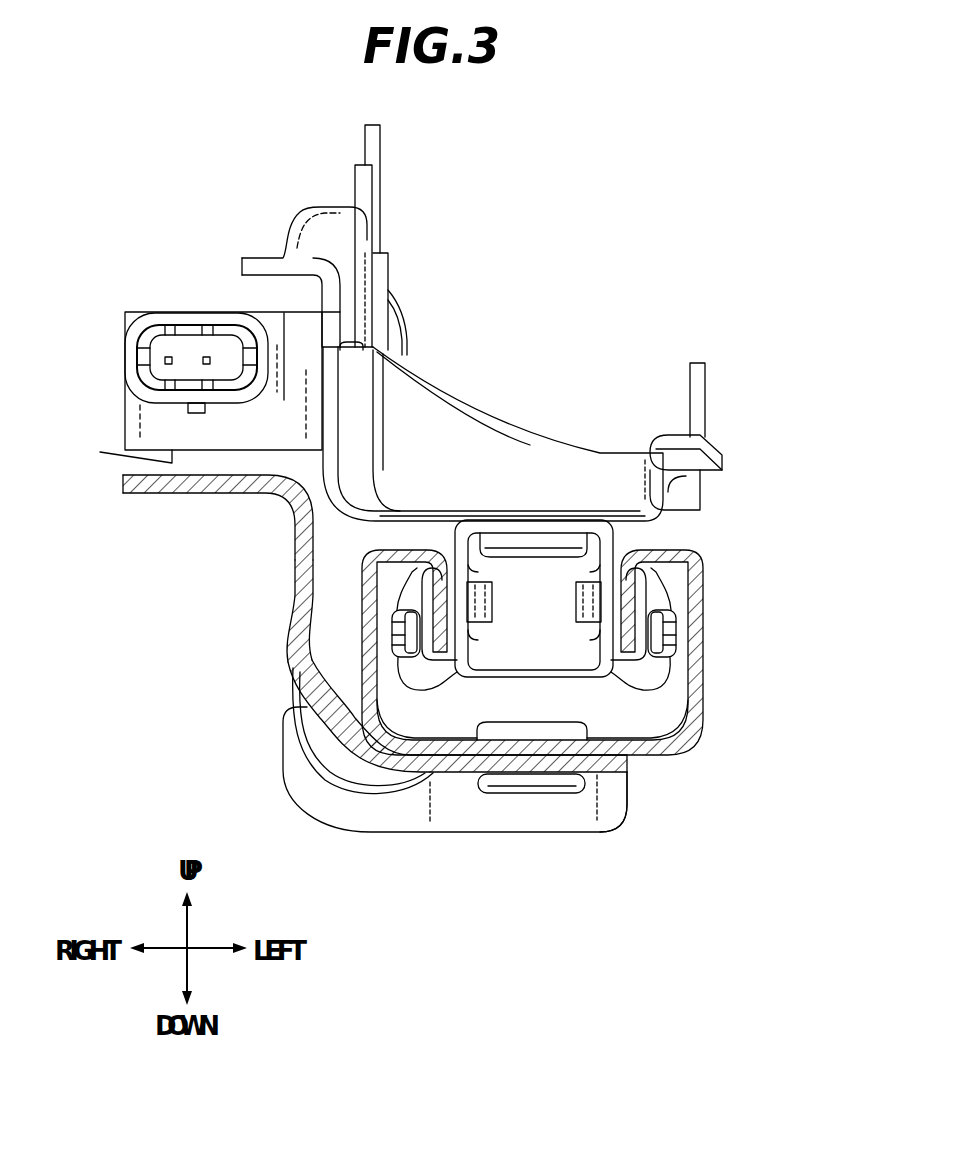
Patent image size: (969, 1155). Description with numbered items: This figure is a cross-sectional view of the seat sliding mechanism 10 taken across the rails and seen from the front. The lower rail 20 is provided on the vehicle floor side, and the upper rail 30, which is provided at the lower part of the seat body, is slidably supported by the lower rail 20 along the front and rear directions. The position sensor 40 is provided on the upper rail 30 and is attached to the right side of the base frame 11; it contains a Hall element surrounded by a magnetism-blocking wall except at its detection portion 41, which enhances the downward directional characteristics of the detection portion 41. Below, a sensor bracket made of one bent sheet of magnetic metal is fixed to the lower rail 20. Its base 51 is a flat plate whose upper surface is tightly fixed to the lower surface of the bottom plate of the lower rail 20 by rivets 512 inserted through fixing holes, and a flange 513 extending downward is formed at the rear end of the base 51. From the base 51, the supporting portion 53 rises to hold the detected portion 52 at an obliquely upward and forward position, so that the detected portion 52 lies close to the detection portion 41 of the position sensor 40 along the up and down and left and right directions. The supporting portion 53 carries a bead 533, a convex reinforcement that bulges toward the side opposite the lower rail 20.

The seat sliding mechanism 10 is at (638, 205).
The base frame 11 is at (455, 392).
The lower rail 20 is at (703, 630).
The upper rail 30 is at (613, 553).
The position sensor 40 is at (188, 311).
The detection portion 41 is at (100, 452).
The base 51 is at (467, 774).
The detected portion 52 is at (155, 494).
The supporting portion 53 is at (293, 563).
The rivet 512 is at (522, 793).
The flange 513 is at (612, 812).
The bead 533 is at (310, 697).